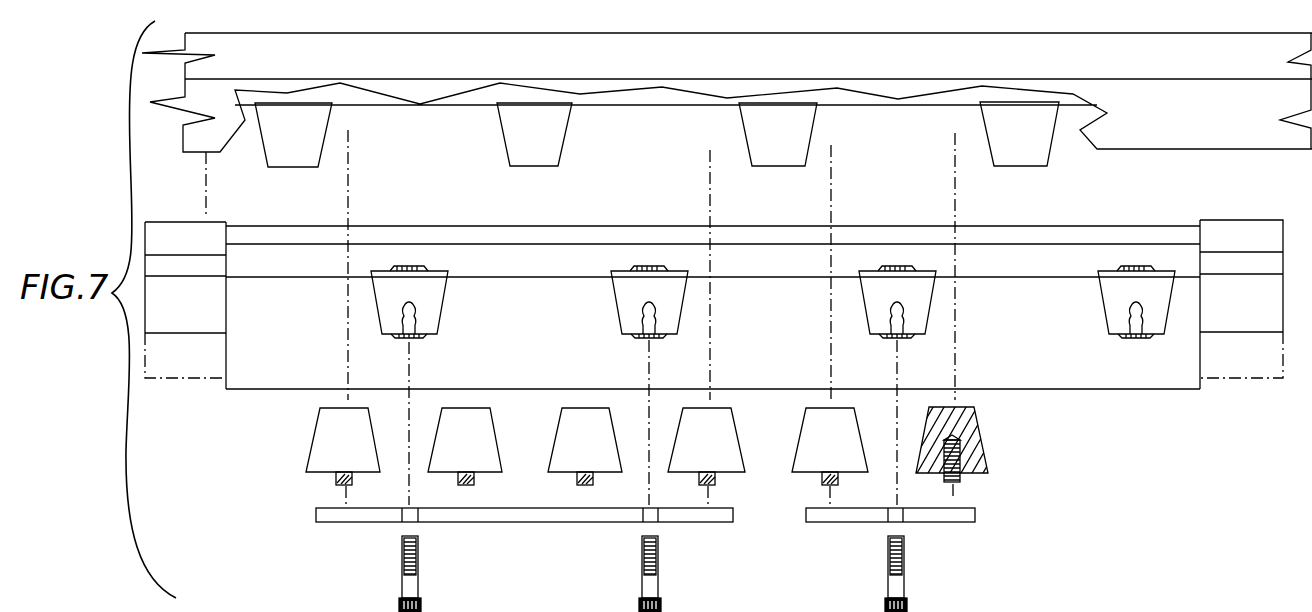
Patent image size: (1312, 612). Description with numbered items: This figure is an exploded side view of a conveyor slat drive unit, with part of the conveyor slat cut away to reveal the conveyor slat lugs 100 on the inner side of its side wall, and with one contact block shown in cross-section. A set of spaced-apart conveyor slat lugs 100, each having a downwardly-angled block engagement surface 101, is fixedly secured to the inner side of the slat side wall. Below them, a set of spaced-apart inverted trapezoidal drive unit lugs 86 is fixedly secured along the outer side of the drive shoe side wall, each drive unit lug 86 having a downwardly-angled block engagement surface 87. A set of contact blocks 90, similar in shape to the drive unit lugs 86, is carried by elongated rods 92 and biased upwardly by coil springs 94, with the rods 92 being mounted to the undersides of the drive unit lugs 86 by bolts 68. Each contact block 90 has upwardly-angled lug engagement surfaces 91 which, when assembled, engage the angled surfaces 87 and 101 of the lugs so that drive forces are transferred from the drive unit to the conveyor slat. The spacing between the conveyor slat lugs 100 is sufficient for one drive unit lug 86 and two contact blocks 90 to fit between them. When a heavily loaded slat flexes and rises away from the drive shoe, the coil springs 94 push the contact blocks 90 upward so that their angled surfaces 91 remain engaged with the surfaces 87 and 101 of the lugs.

The bolt 68 is at (905, 565).
The drive unit lug 86 is at (630, 296).
The block engagement surface 87 is at (442, 311).
The contact block 90 is at (646, 472).
The lug engagement surface 91 is at (556, 432).
The elongated rod 92 is at (825, 513).
The coil spring 94 is at (336, 480).
The conveyor slat lug 100 is at (748, 126).
The block engagement surface 101 is at (327, 132).